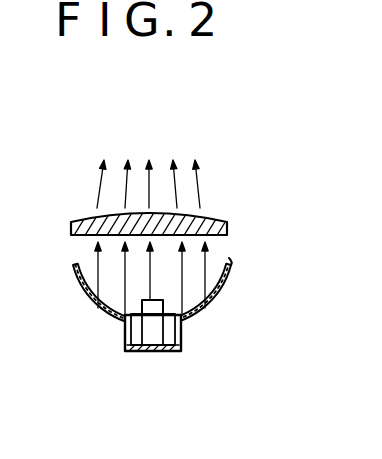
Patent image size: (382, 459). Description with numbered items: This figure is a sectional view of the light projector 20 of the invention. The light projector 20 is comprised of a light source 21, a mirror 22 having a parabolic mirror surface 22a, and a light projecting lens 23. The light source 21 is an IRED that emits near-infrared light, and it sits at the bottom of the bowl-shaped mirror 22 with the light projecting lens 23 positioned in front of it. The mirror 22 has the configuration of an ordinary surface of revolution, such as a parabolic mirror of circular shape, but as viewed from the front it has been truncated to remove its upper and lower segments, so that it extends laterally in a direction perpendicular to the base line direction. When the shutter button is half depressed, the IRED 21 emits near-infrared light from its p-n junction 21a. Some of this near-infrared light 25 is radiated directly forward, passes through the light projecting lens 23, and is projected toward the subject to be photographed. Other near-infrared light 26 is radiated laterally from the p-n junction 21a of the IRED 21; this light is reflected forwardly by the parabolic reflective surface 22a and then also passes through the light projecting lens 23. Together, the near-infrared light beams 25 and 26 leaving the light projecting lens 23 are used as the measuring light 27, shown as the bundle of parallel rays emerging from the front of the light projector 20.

The light projector 20 is at (247, 205).
The light source 21 is at (157, 328).
The p-n junction 21a is at (156, 348).
The mirror 22 is at (77, 287).
The parabolic mirror surface 22a is at (217, 268).
The light projecting lens 23 is at (66, 218).
The near-infrared light 25 is at (148, 278).
The near-infrared light 26 is at (113, 318).
The measuring light 27 is at (197, 157).